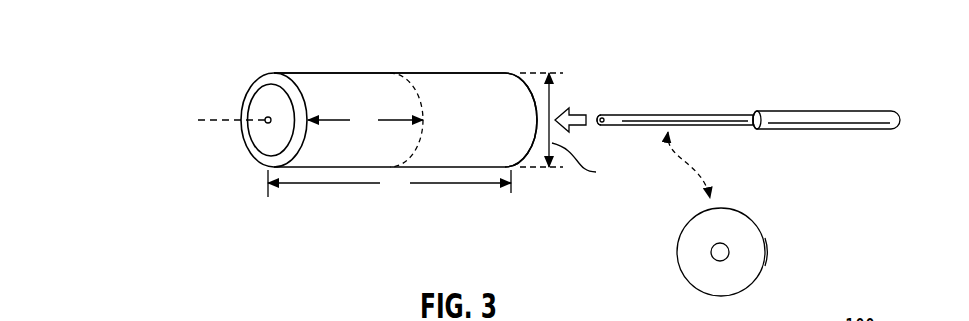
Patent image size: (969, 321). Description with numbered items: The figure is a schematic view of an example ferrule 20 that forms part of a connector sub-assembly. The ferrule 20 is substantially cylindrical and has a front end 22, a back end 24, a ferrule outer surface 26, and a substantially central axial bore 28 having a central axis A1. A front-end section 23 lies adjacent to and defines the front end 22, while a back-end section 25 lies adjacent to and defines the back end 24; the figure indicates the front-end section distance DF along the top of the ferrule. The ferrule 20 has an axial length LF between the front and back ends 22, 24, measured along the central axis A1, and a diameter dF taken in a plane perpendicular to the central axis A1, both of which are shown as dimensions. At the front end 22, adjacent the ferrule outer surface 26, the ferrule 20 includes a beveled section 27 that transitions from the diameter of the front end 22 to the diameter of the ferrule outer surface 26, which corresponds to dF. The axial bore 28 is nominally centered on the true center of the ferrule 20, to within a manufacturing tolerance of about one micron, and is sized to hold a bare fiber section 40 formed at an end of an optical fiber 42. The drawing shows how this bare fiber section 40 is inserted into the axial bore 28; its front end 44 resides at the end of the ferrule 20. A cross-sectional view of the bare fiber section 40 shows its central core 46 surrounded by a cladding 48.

The ferrule 20 is at (259, 46).
The front end 22 is at (264, 100).
The front-end section 23 is at (320, 66).
The back end 24 is at (525, 85).
The back-end section 25 is at (479, 66).
The ferrule outer surface 26 is at (350, 85).
The beveled section 27 is at (270, 80).
The axial bore 28 is at (269, 125).
The central axis A1 is at (213, 125).
The bare fiber section 40 is at (633, 112).
The optical fiber 42 is at (790, 118).
The front end 44 is at (596, 115).
The core 46 is at (725, 244).
The cladding 48 is at (765, 238).